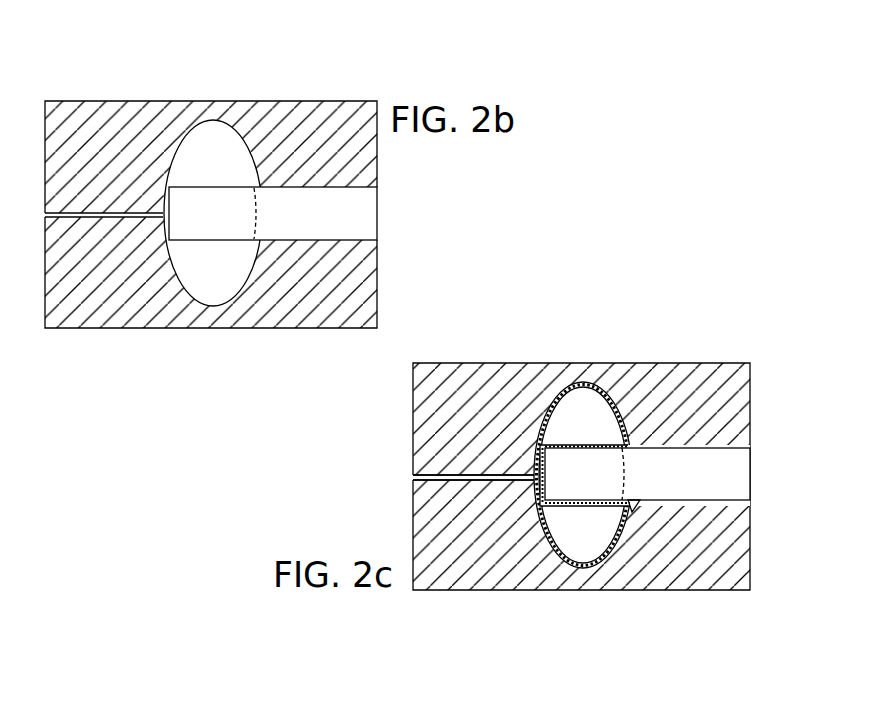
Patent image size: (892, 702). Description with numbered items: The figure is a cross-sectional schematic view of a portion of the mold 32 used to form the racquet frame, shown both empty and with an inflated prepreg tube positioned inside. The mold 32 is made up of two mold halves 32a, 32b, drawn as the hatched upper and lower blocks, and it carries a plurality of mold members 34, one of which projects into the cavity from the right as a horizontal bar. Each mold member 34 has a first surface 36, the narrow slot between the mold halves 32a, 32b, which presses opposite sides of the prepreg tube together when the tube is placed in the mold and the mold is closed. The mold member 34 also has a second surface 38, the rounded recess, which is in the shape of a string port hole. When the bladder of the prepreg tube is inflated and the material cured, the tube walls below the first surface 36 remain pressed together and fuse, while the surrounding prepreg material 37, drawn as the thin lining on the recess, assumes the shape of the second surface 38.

In FIG. 2c, the mold 32 is at (683, 307).
In FIG. 2b, the mold half 32a is at (206, 107).
In FIG. 2c, the mold half 32a is at (575, 372).
In FIG. 2b, the mold half 32b is at (184, 318).
In FIG. 2c, the mold half 32b is at (552, 578).
In FIG. 2b, the mold member 34 is at (293, 210).
In FIG. 2c, the mold member 34 is at (667, 470).
In FIG. 2b, the first surface 36 is at (157, 220).
In FIG. 2c, the first surface 36 is at (523, 485).
In FIG. 2c, the prepreg material 37 is at (557, 403).
In FIG. 2b, the second surface 38 is at (213, 185).
In FIG. 2c, the second surface 38 is at (597, 446).